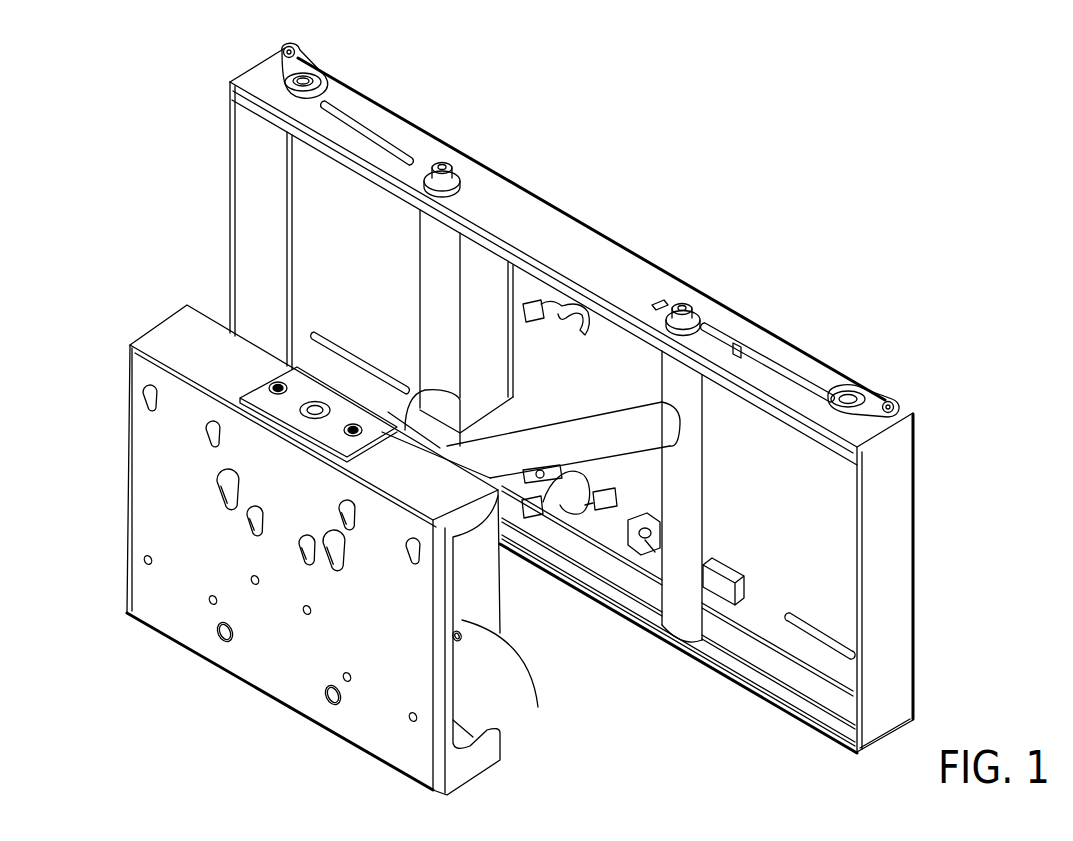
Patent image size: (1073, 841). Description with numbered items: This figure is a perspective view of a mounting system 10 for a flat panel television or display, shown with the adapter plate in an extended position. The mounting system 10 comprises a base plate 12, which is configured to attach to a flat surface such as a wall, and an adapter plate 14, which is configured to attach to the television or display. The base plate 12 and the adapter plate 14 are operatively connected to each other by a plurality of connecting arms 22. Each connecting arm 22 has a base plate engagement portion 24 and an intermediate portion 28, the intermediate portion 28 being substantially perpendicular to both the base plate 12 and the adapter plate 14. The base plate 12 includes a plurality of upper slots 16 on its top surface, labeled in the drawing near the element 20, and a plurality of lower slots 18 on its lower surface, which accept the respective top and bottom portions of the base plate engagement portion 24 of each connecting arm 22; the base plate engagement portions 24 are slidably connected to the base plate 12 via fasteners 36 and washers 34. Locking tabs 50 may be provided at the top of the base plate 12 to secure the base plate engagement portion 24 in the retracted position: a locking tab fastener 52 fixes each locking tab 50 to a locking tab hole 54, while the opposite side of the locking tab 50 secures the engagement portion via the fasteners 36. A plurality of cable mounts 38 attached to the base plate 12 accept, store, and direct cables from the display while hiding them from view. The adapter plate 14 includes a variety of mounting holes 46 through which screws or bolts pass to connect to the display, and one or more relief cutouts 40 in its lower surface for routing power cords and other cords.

The mounting system 10 is at (126, 101).
The base plate 12 is at (916, 566).
The adapter plate 14 is at (250, 690).
The upper slots 16 is at (338, 102).
The lower slots 18 is at (737, 660).
The top rail 20 is at (438, 142).
The connecting arms 22 is at (432, 305).
The base plate engagement portion 24 is at (432, 228).
The intermediate portion 28 is at (418, 392).
The washers 34 is at (457, 178).
The fasteners 36 is at (440, 165).
The cable mounts 38 is at (535, 300).
The relief cutouts 40 is at (475, 698).
The mounting holes 46 is at (243, 520).
The locking tabs 50 is at (303, 70).
The locking tab fastener 52 is at (282, 50).
The locking tab hole 54 is at (660, 300).